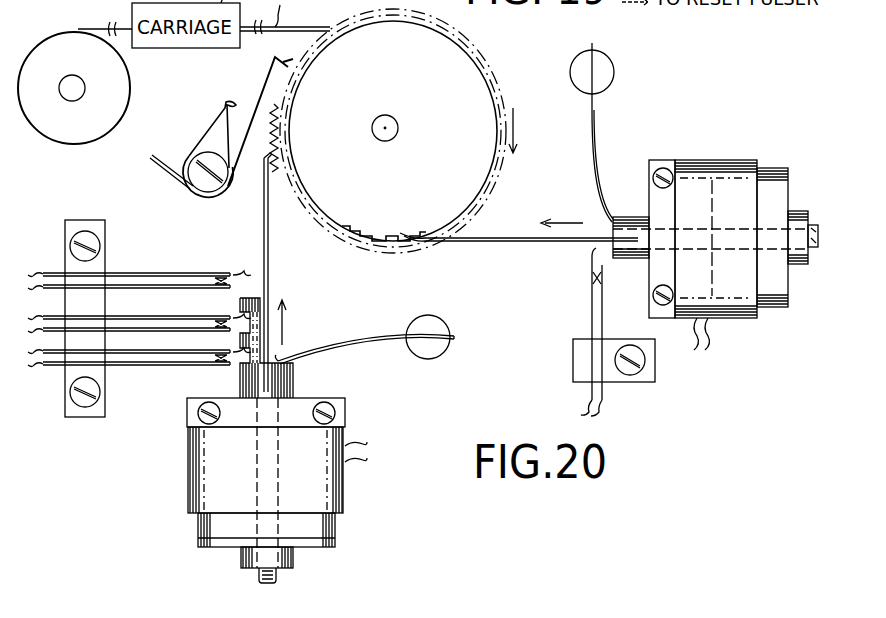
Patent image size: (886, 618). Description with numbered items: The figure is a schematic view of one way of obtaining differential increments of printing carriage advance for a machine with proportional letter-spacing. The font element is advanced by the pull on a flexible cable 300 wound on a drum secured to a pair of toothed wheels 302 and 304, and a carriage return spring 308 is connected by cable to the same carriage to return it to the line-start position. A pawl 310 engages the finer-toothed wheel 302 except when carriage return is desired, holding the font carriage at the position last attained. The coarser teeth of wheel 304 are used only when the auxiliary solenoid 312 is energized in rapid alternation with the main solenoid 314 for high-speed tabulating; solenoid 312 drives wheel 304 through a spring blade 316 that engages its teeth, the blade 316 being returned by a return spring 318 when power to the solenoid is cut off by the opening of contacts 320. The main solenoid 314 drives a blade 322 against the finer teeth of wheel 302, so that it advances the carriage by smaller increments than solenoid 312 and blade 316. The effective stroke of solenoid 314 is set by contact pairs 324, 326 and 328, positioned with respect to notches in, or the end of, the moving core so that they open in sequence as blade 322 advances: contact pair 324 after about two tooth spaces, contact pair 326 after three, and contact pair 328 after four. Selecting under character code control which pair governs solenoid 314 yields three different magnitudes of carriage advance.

The flexible cable 300 is at (284, 13).
The toothed wheel 302 is at (274, 133).
The toothed wheel 304 is at (410, 214).
The carriage return spring 308 is at (120, 77).
The pawl 310 is at (258, 85).
The auxiliary solenoid 312 is at (715, 172).
The main solenoid 314 is at (335, 480).
The spring blade 316 is at (476, 243).
The return spring 318 is at (594, 121).
The contacts 320 is at (596, 313).
The blade 322 is at (271, 260).
The contact pair 324 is at (169, 363).
The contact pair 326 is at (177, 326).
The contact pair 328 is at (173, 282).